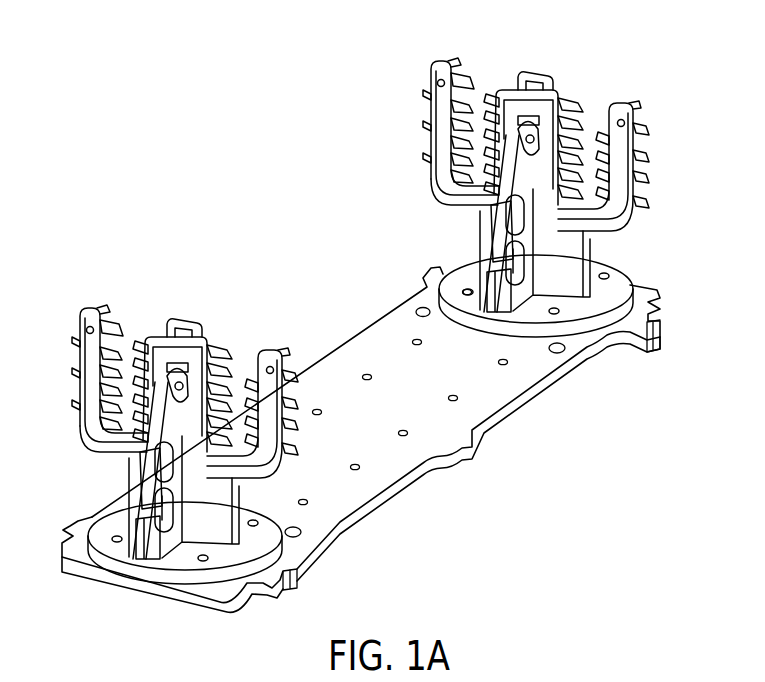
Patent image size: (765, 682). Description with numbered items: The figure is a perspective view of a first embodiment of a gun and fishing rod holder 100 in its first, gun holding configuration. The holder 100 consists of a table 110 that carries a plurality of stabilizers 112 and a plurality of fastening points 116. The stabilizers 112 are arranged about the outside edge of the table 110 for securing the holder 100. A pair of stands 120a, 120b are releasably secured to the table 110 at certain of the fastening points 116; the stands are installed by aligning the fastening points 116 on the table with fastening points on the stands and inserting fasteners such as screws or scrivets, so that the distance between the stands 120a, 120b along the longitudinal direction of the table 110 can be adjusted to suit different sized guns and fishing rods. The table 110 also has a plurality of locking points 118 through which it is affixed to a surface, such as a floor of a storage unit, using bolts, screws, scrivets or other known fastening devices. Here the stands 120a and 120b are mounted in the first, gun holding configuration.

The gun and fishing rod holder 100 is at (369, 306).
The table 110 is at (392, 415).
The stabilizers 112 is at (471, 490).
The fastening points 116 is at (404, 451).
The locking points 118 is at (418, 304).
The stand 120a is at (320, 270).
The stand 120b is at (675, 45).